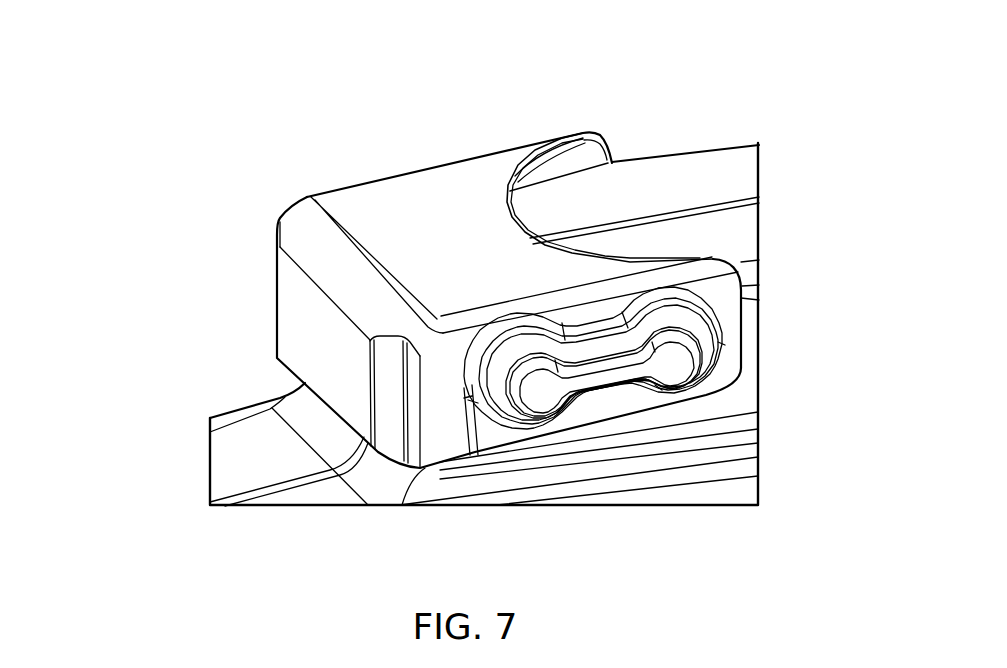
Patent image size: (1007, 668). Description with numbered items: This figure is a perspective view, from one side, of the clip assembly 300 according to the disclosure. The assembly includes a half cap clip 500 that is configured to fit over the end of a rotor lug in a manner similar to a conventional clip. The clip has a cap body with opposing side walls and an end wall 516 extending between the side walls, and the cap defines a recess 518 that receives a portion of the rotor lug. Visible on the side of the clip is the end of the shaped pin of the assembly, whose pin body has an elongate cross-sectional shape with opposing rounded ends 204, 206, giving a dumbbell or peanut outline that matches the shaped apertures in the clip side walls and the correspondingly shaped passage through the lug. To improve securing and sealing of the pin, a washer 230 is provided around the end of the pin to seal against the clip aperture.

The clip assembly 300 is at (503, 128).
The half cap clip 500 is at (377, 198).
The end wall 516 is at (297, 318).
The recess 518 is at (608, 146).
The rounded end 206 is at (703, 367).
The rounded end 204 is at (510, 393).
The washer 230 is at (583, 400).